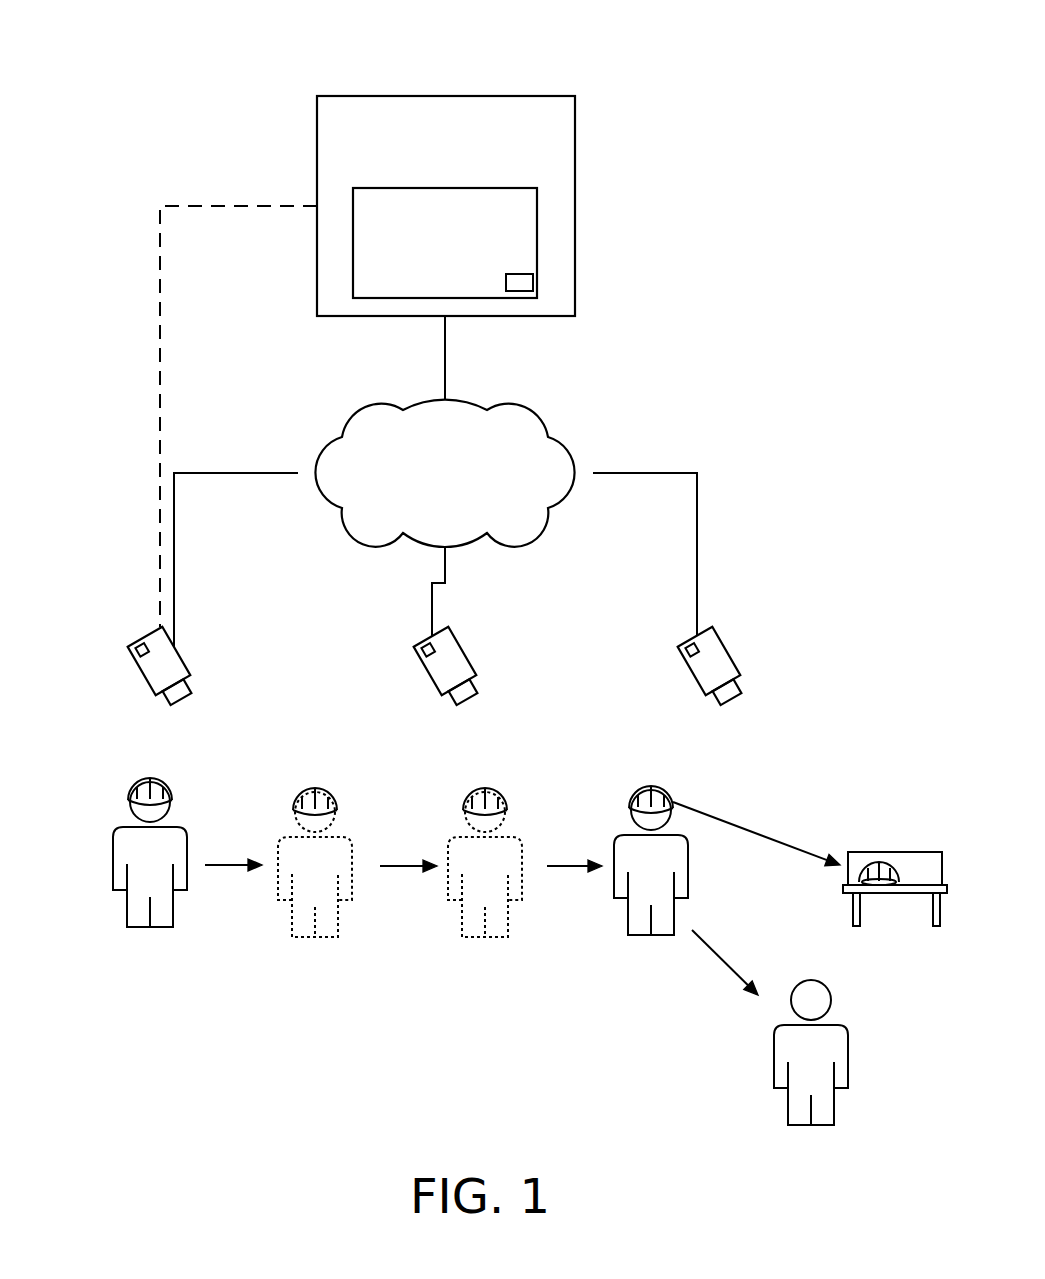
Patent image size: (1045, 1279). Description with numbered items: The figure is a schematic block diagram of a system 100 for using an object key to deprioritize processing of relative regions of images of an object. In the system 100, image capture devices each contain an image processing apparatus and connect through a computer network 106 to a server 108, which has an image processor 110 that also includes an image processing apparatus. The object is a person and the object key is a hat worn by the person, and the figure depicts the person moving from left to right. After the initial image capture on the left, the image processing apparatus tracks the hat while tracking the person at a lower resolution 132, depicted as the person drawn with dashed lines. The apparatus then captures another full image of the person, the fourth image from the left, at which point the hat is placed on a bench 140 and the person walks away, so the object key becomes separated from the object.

The system 100 is at (160, 50).
The computer network 106 is at (427, 514).
The server 108 is at (427, 161).
The image processor 110 is at (427, 284).
The lower resolution 132 is at (485, 937).
The bench 140 is at (923, 858).